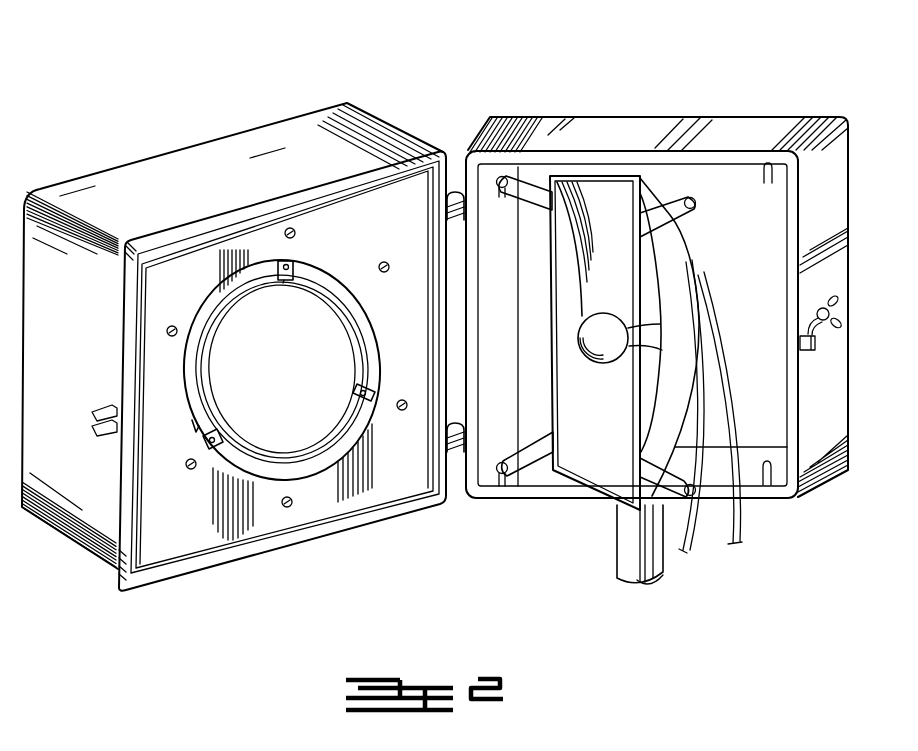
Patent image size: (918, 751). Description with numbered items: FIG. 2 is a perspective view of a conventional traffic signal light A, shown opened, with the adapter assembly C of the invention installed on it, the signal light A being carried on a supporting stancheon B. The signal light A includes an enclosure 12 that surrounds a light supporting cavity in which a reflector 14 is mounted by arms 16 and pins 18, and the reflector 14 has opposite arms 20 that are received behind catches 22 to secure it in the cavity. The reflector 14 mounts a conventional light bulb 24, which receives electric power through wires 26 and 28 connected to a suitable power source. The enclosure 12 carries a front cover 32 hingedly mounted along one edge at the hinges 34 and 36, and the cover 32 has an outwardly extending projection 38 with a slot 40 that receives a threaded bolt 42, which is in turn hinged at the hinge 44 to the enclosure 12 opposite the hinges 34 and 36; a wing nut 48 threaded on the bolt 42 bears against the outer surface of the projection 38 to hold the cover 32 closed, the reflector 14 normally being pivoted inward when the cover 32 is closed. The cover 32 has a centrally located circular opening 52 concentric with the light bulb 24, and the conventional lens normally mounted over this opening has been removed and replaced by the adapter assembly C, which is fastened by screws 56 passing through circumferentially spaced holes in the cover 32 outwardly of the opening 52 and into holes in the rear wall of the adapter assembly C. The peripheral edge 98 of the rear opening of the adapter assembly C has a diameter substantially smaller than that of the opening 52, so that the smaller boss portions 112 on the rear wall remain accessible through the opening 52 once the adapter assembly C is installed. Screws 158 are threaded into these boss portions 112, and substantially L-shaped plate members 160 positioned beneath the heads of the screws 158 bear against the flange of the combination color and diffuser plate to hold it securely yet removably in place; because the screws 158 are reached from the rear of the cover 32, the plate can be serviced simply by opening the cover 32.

The traffic signal light A is at (767, 88).
The supporting stancheon B is at (645, 587).
The adapter assembly C is at (150, 152).
The enclosure 12 is at (849, 175).
The reflector 14 is at (610, 176).
The arms 16 is at (535, 190).
The pins 18 is at (507, 176).
The opposite arms 20 is at (690, 197).
The catches 22 is at (772, 165).
The light bulb 24 is at (604, 362).
The wires 26 is at (707, 330).
The wires 28 is at (720, 375).
The front cover 32 is at (312, 223).
The hinge 34 is at (453, 192).
The hinge 36 is at (452, 424).
The outwardly extending projection 38 is at (92, 410).
The slot 40 is at (91, 427).
The threaded bolt 42 is at (820, 330).
The hinge 44 is at (812, 352).
The wing nut 48 is at (830, 310).
The circular opening 52 is at (197, 428).
The screws 56 is at (300, 231).
The peripheral edge 98 is at (362, 326).
The boss portions 112 is at (283, 262).
The screws 158 is at (300, 262).
The L-shaped plate members 160 is at (275, 281).